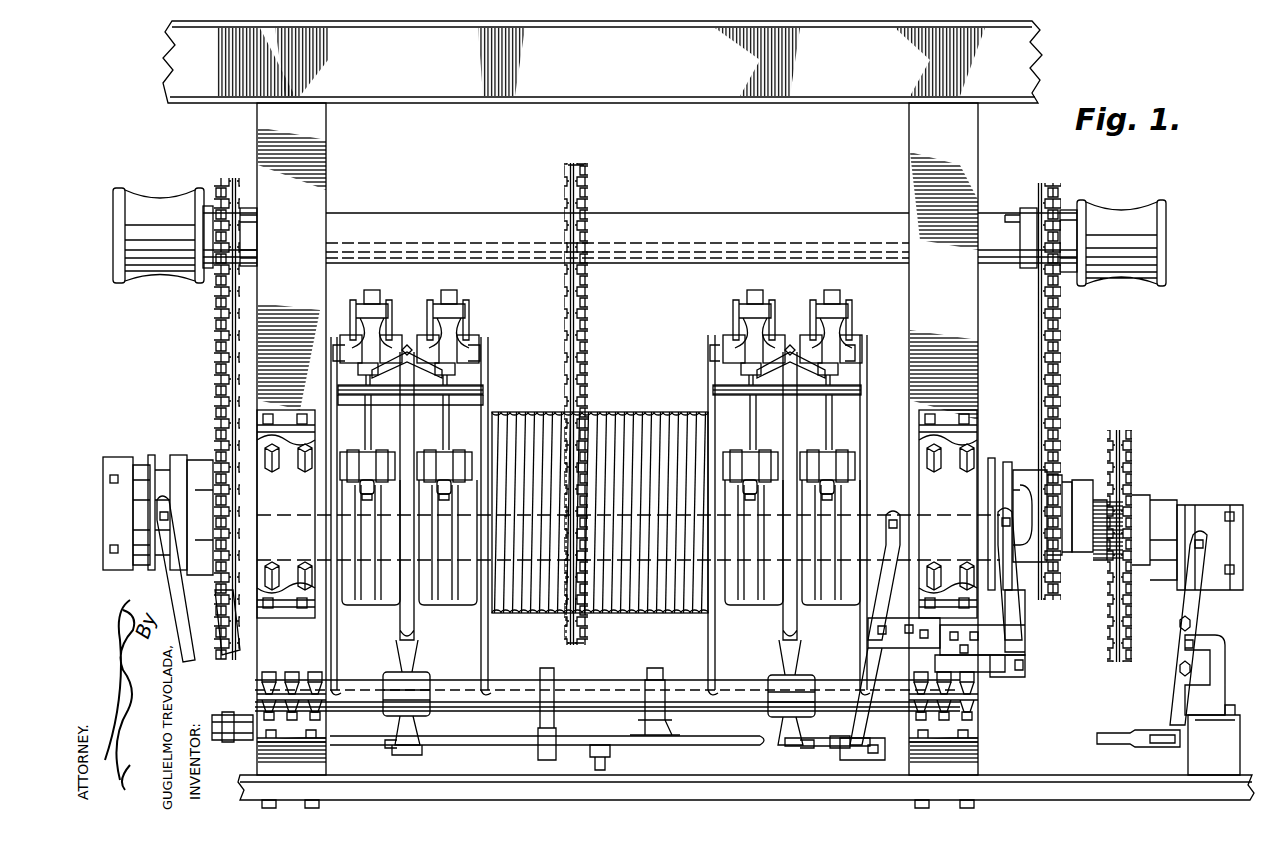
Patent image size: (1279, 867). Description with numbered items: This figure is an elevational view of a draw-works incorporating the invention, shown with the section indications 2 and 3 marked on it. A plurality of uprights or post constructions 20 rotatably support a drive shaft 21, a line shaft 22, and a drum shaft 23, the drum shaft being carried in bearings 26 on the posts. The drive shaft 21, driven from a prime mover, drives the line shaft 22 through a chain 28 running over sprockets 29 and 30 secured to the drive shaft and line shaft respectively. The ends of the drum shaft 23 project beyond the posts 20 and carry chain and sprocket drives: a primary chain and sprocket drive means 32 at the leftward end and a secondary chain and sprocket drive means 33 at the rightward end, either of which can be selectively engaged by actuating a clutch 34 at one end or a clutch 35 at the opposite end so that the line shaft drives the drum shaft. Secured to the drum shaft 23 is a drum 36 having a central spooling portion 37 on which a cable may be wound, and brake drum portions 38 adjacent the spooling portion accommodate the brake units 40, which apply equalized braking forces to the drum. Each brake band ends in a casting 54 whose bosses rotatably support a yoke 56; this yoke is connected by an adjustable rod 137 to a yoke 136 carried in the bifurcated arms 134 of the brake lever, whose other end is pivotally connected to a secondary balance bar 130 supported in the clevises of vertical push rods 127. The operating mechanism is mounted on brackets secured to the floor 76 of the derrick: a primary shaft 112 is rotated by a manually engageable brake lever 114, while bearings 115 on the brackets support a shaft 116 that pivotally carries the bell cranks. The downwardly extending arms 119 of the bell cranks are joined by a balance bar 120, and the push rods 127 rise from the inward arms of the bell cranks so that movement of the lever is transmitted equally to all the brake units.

The post construction 20 is at (258, 142).
The line shaft 22 is at (722, 215).
The sprocket 30 is at (590, 185).
The chain 28 is at (590, 345).
The primary chain and sprocket drive means 32 is at (220, 345).
The secondary chain and sprocket drive means 33 is at (1065, 388).
The drum 36 is at (639, 389).
The spooling portion 37 is at (502, 412).
The brake drum portion 38 is at (484, 335).
The brake unit 40 is at (398, 312).
The arm 134 is at (452, 308).
The yoke 136 is at (346, 310).
The secondary balance bar 130 is at (470, 356).
The adjustable rod 137 is at (345, 395).
The drive shaft 21 is at (455, 565).
The sprocket 29 is at (565, 580).
The casting 54 is at (355, 522).
The vertical push rod 127 is at (400, 594).
The yoke 56 is at (350, 488).
The bearing 26 is at (268, 480).
The drum shaft 23 is at (910, 515).
The clutch 34 is at (150, 545).
The clutch 35 is at (1005, 485).
The shaft 116 is at (598, 690).
The bearing 115 is at (400, 682).
The downwardly extending arm 119 is at (398, 728).
The balance bar 120 is at (640, 750).
The primary shaft 112 is at (240, 740).
The brake lever 114 is at (240, 660).
The floor 76 is at (516, 795).
The section line 3 is at (365, 808).
The section line 2 is at (80, 417).